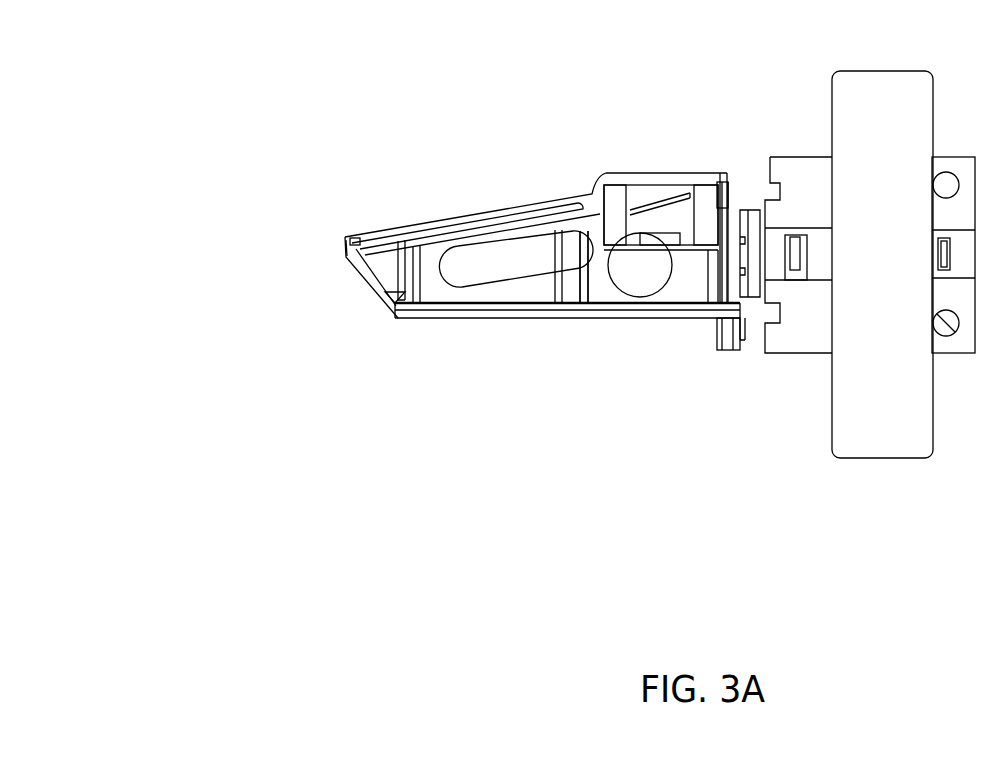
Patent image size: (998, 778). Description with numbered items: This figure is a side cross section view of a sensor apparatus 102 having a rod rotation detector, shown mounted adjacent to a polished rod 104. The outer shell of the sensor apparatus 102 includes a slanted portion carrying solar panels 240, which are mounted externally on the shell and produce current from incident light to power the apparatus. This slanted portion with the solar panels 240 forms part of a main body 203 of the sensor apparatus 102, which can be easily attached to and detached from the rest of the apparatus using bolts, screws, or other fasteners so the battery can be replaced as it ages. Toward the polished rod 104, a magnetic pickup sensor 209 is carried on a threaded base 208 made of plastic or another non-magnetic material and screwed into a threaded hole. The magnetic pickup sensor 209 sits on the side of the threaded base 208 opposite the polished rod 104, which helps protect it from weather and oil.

The sensor apparatus 102 is at (205, 542).
The polished rod 104 is at (871, 441).
The main body 203 is at (596, 295).
The threaded base 208 is at (797, 217).
The magnetic pickup sensor 209 is at (775, 235).
The solar panels 240 is at (372, 249).